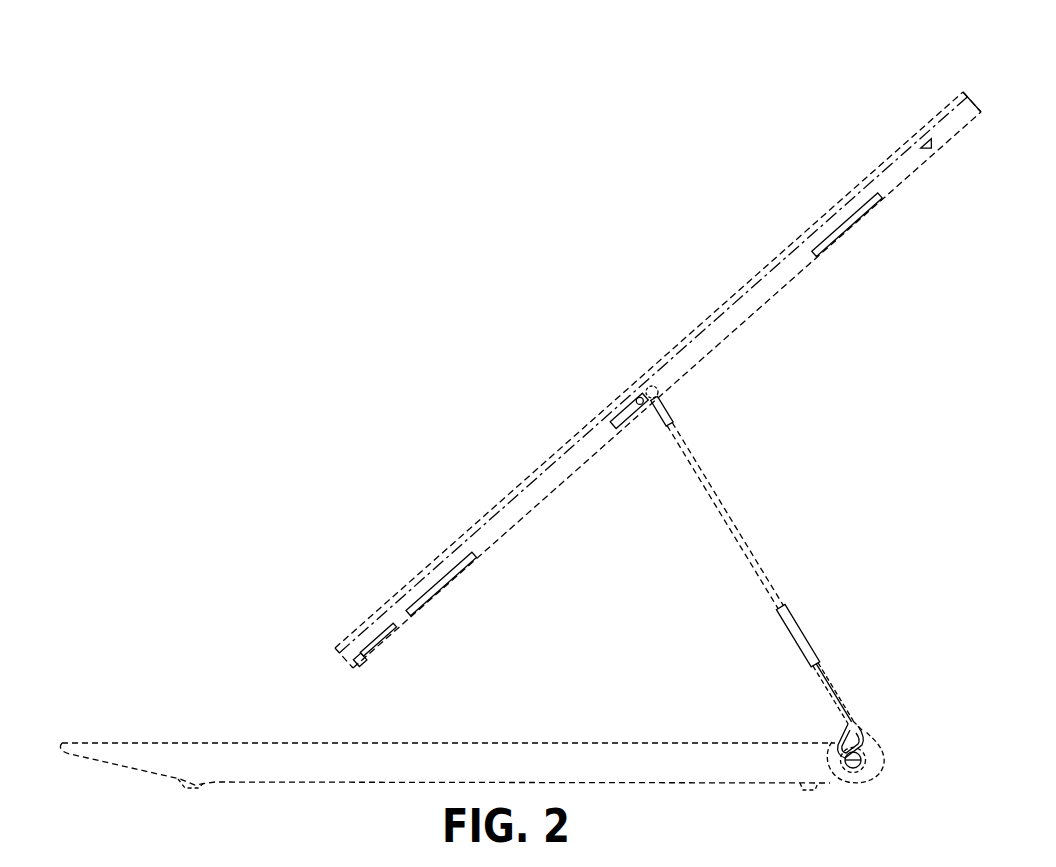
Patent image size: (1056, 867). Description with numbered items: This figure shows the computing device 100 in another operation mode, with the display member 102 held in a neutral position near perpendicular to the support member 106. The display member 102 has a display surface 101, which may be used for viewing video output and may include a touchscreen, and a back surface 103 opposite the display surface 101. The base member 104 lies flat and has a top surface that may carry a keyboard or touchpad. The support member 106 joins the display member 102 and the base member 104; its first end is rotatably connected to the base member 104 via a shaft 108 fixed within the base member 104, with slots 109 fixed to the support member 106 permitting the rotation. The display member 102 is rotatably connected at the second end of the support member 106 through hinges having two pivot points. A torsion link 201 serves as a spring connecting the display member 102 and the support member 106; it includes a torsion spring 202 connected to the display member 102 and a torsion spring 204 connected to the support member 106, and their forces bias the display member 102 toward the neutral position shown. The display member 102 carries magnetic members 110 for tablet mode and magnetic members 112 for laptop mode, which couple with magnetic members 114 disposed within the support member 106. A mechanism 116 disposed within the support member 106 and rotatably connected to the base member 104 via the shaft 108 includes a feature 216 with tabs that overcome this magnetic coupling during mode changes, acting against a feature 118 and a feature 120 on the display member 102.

The computing device 100 is at (581, 283).
The display surface 101 is at (740, 290).
The display member 102 is at (980, 110).
The back surface 103 is at (760, 305).
The base member 104 is at (546, 742).
The support member 106 is at (752, 540).
The shaft 108 is at (856, 785).
The slots 109 is at (843, 737).
The magnetic members 110 is at (848, 232).
The magnetic members 112 is at (455, 585).
The magnetic members 114 is at (800, 613).
The mechanism 116 is at (837, 693).
The feature 118 is at (395, 640).
The feature 120 is at (932, 148).
The torsion link 201 is at (645, 385).
The torsion spring 202 is at (632, 430).
The torsion spring 204 is at (672, 412).
The feature 216 is at (868, 702).